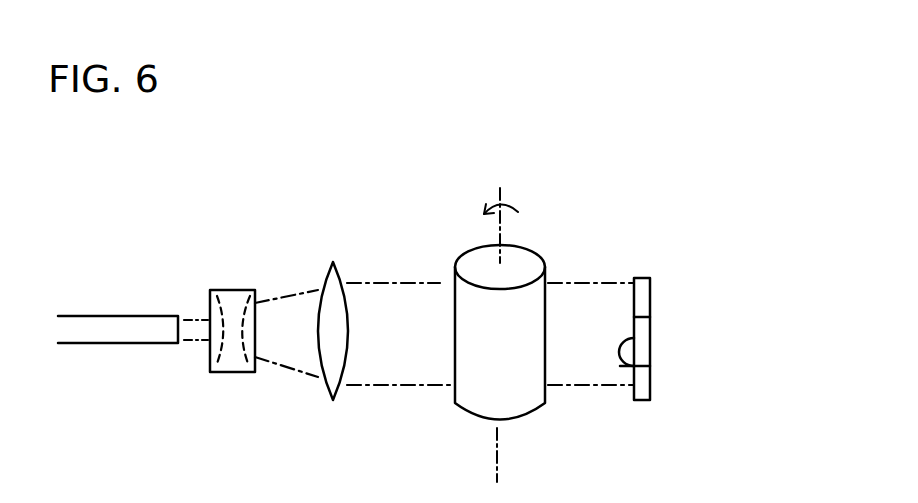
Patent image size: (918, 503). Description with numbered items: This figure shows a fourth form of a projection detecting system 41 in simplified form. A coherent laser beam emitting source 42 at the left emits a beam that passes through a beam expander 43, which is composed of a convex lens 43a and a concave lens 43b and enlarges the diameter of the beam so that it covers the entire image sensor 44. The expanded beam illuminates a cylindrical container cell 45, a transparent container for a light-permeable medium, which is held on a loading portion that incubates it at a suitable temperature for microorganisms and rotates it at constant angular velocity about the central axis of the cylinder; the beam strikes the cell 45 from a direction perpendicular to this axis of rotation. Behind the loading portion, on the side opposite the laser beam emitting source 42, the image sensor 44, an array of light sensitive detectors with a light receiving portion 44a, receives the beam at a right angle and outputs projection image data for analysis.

The projection detecting system 41 is at (557, 255).
The coherent laser beam emitting source 42 is at (133, 343).
The beam expander 43 is at (393, 192).
The convex lens 43a is at (231, 290).
The concave lens 43b is at (333, 262).
The image sensor 44 is at (652, 300).
The light receiving portion 44a is at (650, 366).
The cylindrical container cell 45 is at (470, 400).